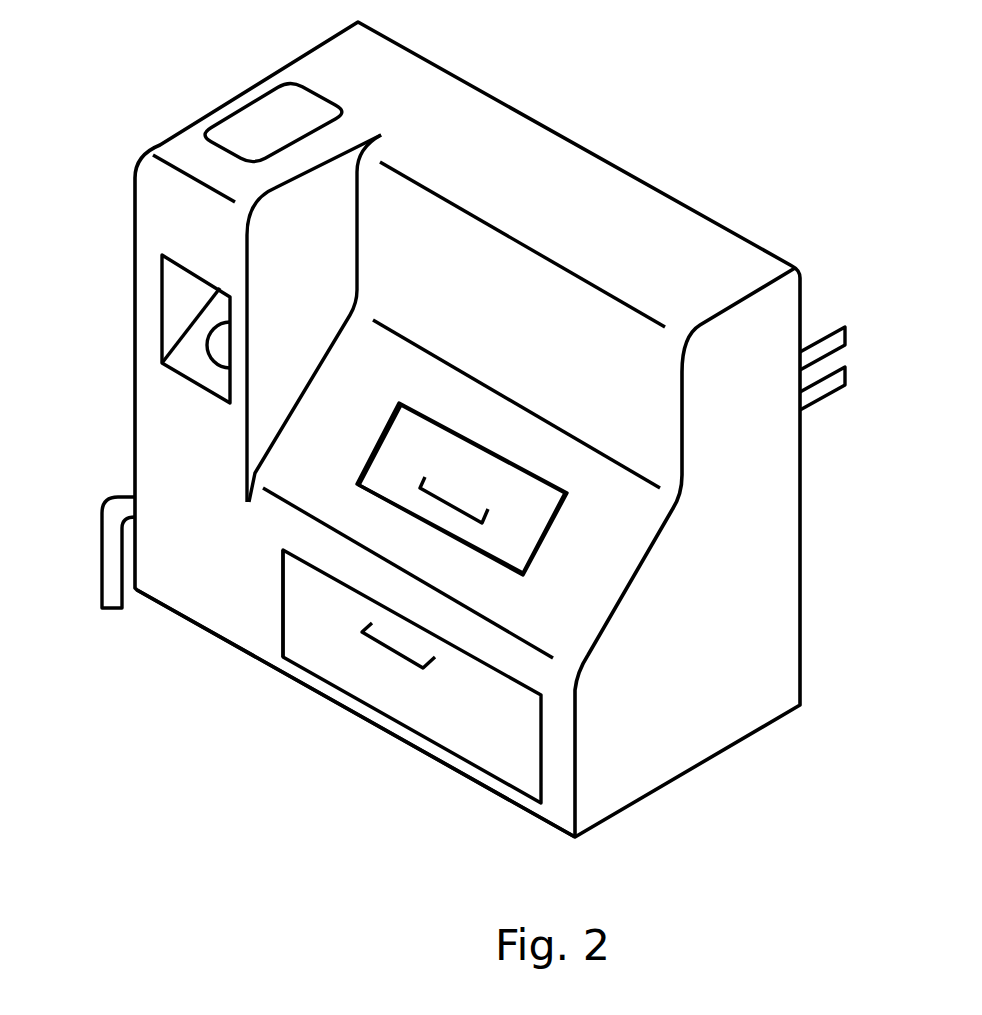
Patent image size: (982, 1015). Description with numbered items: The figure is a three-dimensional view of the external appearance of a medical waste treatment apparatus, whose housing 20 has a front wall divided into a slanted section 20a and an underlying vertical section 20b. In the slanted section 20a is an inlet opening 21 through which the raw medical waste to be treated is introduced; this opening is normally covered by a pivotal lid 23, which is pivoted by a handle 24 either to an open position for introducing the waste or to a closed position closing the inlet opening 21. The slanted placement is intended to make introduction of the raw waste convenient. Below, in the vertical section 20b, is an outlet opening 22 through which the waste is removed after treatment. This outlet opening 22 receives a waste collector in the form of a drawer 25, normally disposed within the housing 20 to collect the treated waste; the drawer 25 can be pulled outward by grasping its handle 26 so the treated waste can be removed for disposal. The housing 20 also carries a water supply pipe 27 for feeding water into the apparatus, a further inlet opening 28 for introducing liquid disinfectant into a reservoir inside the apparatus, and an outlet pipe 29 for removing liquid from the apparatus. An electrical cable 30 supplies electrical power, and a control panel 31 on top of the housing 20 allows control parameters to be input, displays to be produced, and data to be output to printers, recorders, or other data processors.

The housing 20 is at (593, 143).
The slanted section 20a is at (622, 565).
The vertical section 20b is at (553, 760).
The inlet opening 21 is at (367, 460).
The outlet opening 22 is at (283, 607).
The pivotal lid 23 is at (428, 437).
The handle 24 is at (460, 510).
The drawer 25 is at (500, 743).
The handle 26 is at (390, 652).
The water supply pipe 27 is at (830, 327).
The inlet opening 28 is at (218, 345).
The outlet pipe 29 is at (112, 595).
The electrical cable 30 is at (823, 387).
The control panel 31 is at (268, 127).